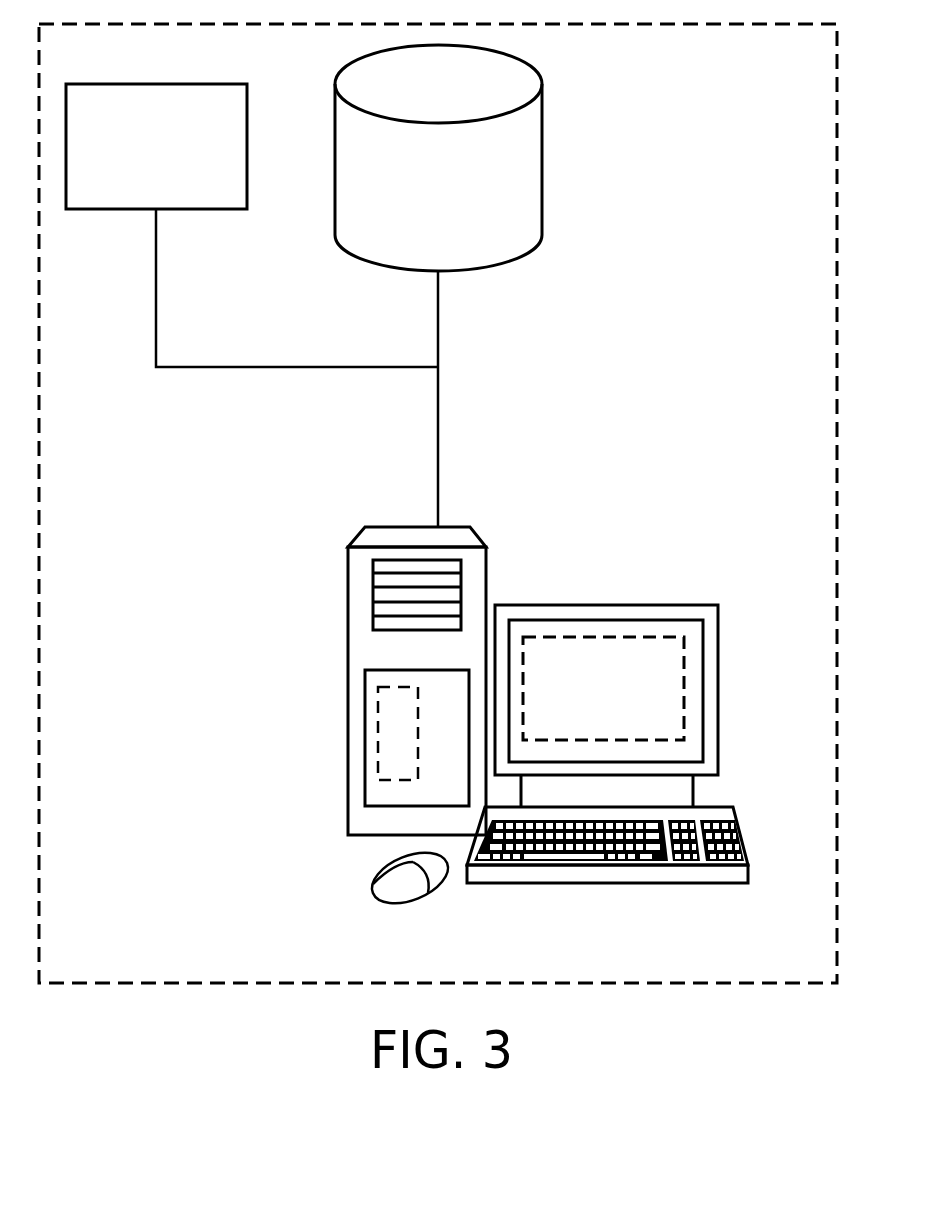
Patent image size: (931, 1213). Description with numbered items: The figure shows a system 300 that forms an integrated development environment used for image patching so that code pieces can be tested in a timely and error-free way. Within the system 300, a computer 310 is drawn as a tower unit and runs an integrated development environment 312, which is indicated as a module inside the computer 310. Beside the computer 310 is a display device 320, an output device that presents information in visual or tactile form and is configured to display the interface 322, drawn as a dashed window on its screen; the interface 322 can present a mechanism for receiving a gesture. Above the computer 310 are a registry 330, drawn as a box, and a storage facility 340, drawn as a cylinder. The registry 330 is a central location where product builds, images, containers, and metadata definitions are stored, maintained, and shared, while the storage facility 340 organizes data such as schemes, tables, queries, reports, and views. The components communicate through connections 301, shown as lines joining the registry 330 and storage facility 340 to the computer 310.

The system 300 is at (694, 76).
The connections 301 is at (192, 368).
The computer 310 is at (347, 580).
The integrated development environment 312 is at (379, 747).
The display device 320 is at (604, 603).
The interface 322 is at (684, 657).
The registry 330 is at (178, 161).
The storage facility 340 is at (461, 194).